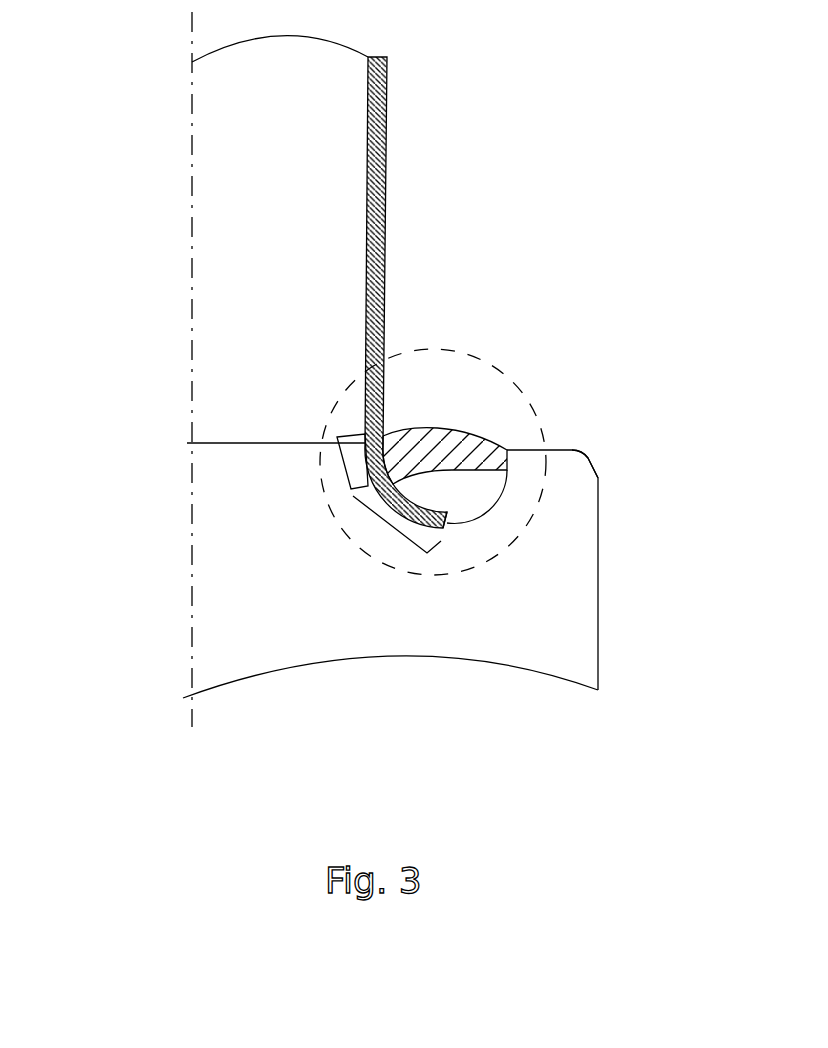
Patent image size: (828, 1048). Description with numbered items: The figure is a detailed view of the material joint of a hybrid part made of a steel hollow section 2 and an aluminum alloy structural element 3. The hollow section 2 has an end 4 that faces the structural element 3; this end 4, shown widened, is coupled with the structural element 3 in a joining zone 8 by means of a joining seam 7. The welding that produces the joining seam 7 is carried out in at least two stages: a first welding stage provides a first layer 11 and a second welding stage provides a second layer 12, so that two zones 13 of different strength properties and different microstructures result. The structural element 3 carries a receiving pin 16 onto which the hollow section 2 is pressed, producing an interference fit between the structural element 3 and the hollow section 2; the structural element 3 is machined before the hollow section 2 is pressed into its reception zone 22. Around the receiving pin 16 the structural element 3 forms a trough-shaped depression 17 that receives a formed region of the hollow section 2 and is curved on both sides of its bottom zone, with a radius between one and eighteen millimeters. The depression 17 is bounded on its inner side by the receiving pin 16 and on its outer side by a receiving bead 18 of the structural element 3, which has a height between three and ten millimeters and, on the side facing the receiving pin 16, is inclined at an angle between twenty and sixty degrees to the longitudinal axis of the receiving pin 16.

The hollow section 2 is at (383, 210).
The structural element 3 is at (580, 610).
The end 4 is at (438, 530).
The joining seam 7 is at (508, 471).
The joining zone 8 is at (537, 417).
The first layer 11 is at (448, 507).
The second layer 12 is at (463, 440).
The zones 13 is at (390, 527).
The receiving pin 16 is at (235, 458).
The depression 17 is at (458, 527).
The receiving bead 18 is at (552, 483).
The reception zone 22 is at (475, 510).